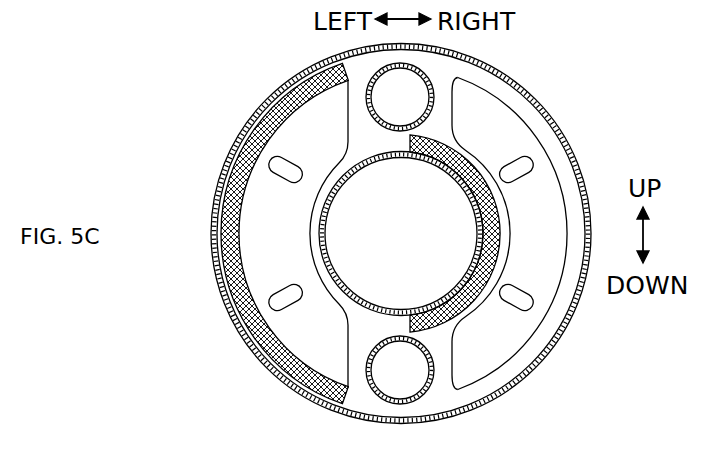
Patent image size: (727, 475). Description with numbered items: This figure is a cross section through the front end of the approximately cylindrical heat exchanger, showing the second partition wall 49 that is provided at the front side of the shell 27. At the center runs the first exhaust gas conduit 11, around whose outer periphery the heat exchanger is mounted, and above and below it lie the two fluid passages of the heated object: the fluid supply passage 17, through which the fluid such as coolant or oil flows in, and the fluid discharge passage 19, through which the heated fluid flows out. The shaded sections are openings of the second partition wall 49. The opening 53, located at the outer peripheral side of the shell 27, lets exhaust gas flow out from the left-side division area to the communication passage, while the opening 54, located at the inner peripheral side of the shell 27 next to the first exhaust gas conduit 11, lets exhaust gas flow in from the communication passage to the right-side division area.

The first exhaust gas conduit 11 is at (321, 236).
The fluid supply passage 17 is at (413, 385).
The fluid discharge passage 19 is at (412, 97).
The shell 27 is at (212, 243).
The second partition wall 49 is at (532, 120).
The opening 53 is at (303, 85).
The opening 54 is at (472, 182).